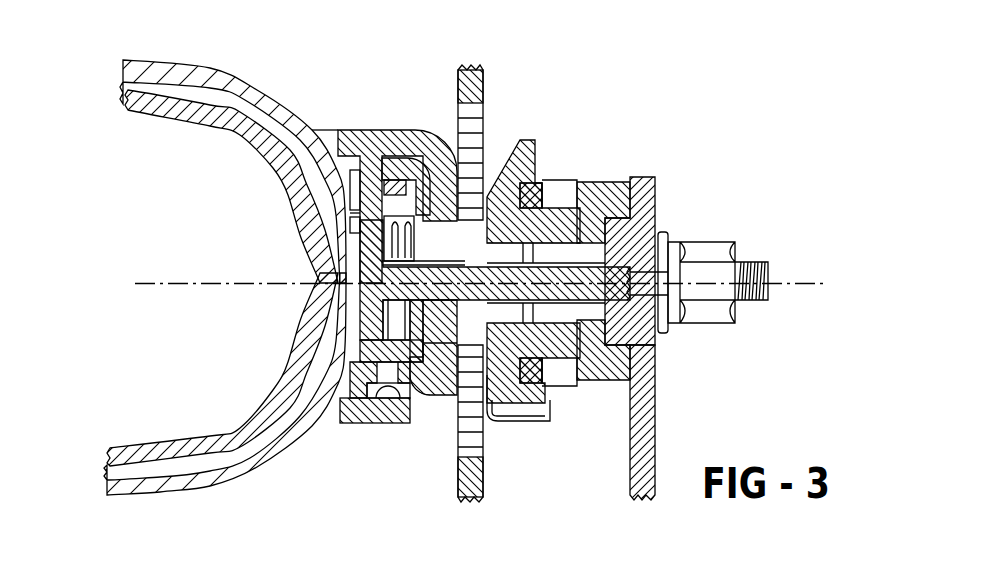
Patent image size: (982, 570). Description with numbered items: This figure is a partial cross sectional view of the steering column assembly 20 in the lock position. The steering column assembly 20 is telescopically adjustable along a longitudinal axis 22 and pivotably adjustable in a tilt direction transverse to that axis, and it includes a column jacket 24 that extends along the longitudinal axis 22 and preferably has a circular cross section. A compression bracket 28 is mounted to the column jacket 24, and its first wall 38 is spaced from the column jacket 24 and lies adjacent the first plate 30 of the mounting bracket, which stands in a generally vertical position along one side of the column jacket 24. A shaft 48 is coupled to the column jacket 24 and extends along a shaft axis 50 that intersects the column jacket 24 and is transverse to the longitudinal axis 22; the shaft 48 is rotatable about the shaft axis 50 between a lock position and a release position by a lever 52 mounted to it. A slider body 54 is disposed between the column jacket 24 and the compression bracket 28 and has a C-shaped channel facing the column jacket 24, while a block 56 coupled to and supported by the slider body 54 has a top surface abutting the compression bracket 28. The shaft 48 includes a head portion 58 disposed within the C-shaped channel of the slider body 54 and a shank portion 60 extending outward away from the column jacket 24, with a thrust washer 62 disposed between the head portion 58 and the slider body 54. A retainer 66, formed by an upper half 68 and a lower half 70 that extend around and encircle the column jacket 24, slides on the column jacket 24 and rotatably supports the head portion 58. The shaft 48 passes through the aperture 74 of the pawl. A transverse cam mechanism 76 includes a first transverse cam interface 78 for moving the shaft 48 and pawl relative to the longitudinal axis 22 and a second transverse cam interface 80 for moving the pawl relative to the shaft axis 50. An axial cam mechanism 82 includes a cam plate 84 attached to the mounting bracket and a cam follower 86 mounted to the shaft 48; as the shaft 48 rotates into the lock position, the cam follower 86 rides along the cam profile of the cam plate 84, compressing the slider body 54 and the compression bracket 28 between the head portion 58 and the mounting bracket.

The steering column assembly 20 is at (630, 79).
The longitudinal axis 22 is at (160, 283).
The column jacket 24 is at (177, 110).
The compression bracket 28 is at (388, 273).
The first plate 30 is at (473, 479).
The first wall 38 is at (440, 390).
The shaft 48 is at (590, 235).
The shaft axis 50 is at (786, 282).
The lever 52 is at (655, 457).
The slider body 54 is at (405, 178).
The block 56 is at (386, 165).
The head portion 58 is at (367, 372).
The shank portion 60 is at (467, 266).
The thrust washer 62 is at (430, 178).
The retainer 66 is at (225, 276).
The upper half 68 is at (172, 70).
The lower half 70 is at (150, 503).
The aperture 74 is at (540, 421).
The transverse cam mechanism 76 is at (344, 204).
The first transverse cam interface 78 is at (354, 226).
The second transverse cam interface 80 is at (548, 208).
The axial cam mechanism 82 is at (490, 248).
The cam plate 84 is at (548, 179).
The cam follower 86 is at (588, 189).